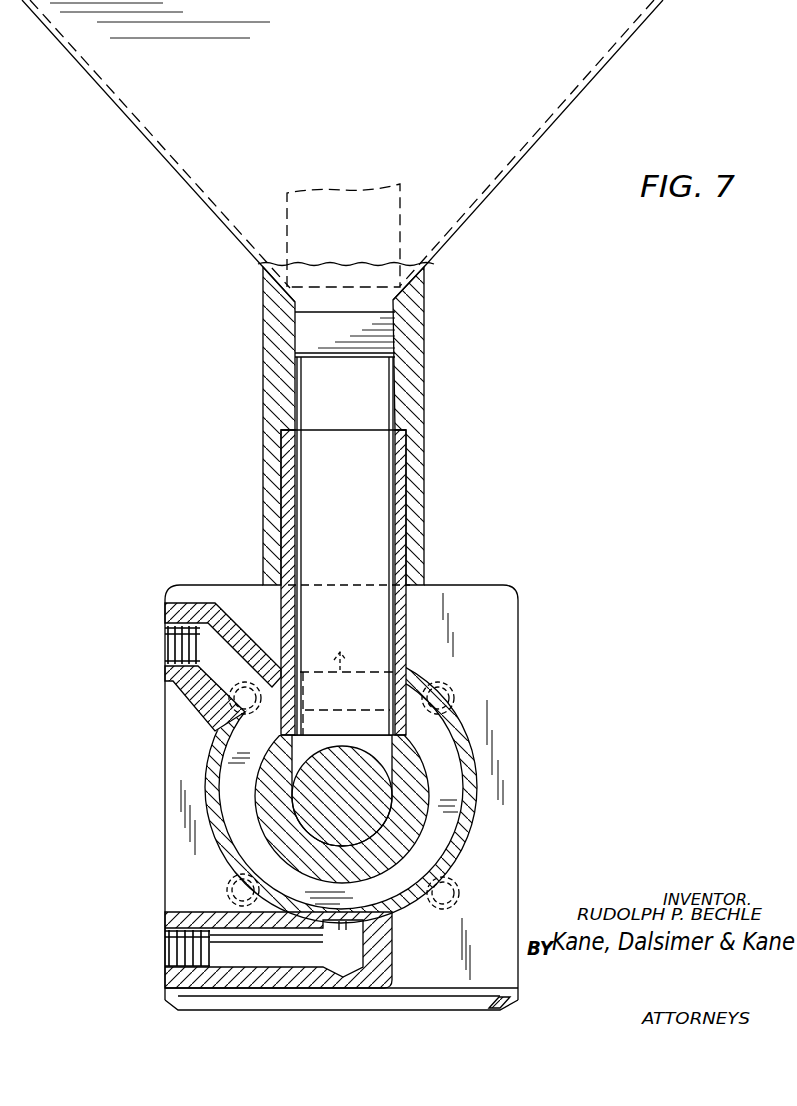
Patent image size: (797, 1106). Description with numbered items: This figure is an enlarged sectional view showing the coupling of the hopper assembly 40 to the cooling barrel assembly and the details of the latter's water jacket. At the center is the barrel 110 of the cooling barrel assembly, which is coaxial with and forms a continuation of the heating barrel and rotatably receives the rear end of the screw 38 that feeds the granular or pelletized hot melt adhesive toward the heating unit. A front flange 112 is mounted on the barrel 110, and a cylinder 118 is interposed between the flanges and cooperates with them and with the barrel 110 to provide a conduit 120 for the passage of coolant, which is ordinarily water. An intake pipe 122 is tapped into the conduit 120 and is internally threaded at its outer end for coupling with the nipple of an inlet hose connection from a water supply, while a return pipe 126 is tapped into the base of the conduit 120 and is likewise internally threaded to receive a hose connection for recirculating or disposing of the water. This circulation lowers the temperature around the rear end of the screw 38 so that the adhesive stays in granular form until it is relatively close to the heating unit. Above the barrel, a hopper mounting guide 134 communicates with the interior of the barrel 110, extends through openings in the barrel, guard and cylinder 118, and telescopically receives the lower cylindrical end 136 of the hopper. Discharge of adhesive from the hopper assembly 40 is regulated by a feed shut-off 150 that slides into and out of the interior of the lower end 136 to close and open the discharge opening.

The screw 38 is at (380, 832).
The hopper assembly 40 is at (513, 181).
The barrel 110 is at (364, 880).
The front flange 112 is at (518, 721).
The cylinder 118 is at (480, 818).
The conduit 120 is at (469, 792).
The intake pipe 122 is at (244, 581).
The return pipe 126 is at (293, 989).
The hopper mounting guide 134 is at (400, 517).
The lower cylindrical end 136 is at (425, 463).
The feed shut-off 150 is at (373, 400).